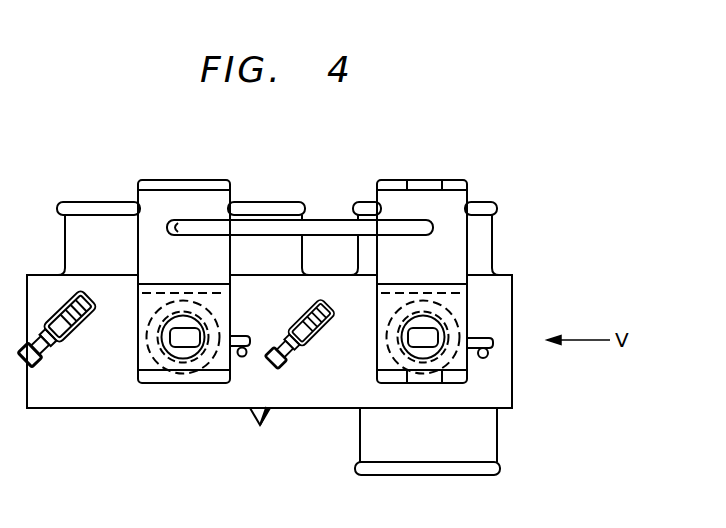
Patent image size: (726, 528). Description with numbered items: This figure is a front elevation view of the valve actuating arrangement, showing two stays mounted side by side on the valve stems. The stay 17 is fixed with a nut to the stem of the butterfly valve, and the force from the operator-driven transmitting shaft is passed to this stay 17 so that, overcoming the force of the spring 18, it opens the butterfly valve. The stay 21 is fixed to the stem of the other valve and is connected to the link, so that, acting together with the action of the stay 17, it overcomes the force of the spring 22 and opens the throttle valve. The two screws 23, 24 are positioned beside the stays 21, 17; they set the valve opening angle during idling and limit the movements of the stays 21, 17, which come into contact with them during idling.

The stay 21 is at (188, 202).
The stay 17 is at (422, 205).
The spring 18 is at (484, 338).
The spring 22 is at (234, 350).
The screw 23 is at (47, 352).
The screw 24 is at (290, 348).